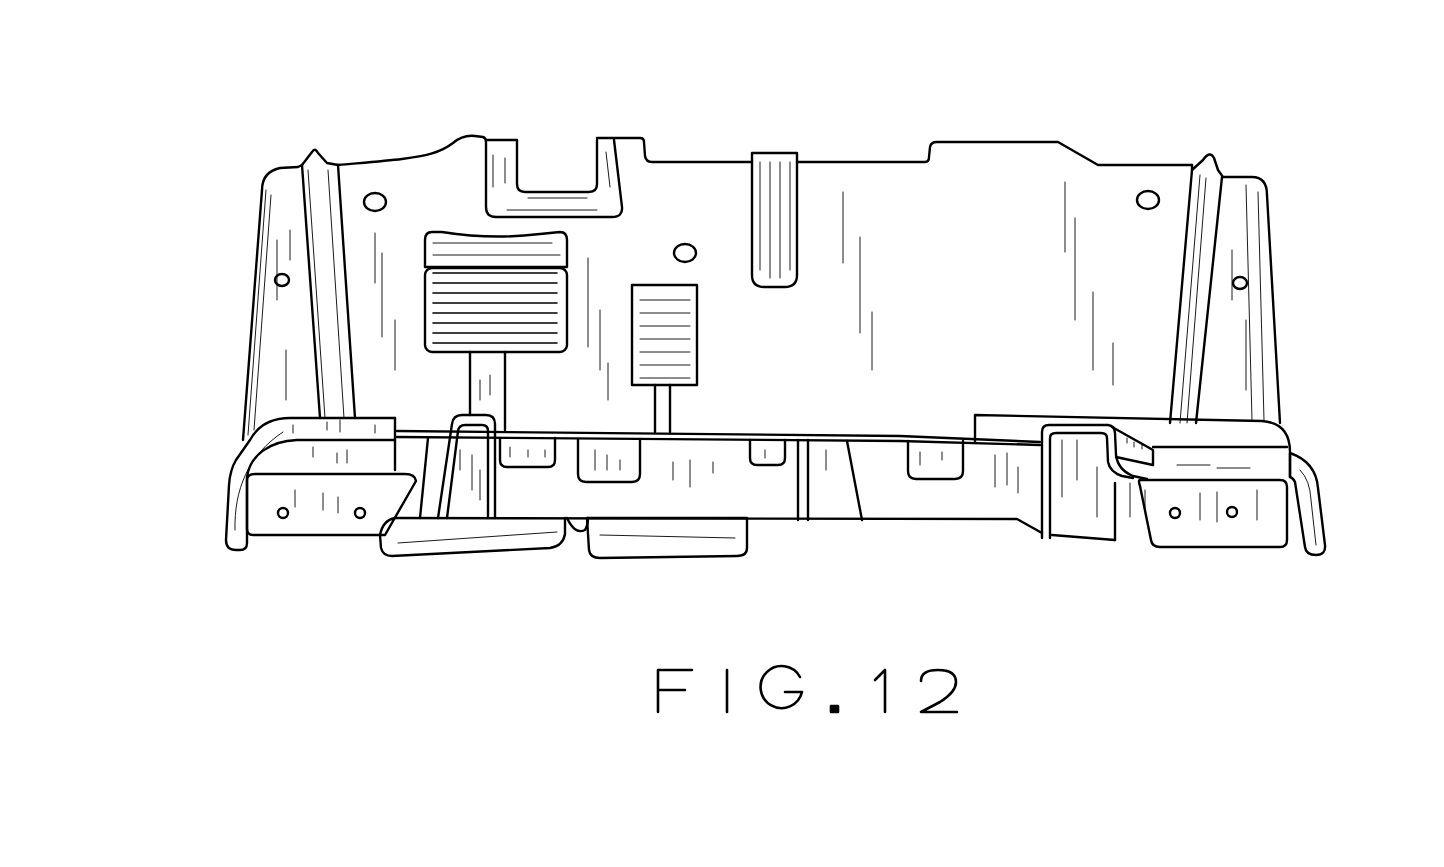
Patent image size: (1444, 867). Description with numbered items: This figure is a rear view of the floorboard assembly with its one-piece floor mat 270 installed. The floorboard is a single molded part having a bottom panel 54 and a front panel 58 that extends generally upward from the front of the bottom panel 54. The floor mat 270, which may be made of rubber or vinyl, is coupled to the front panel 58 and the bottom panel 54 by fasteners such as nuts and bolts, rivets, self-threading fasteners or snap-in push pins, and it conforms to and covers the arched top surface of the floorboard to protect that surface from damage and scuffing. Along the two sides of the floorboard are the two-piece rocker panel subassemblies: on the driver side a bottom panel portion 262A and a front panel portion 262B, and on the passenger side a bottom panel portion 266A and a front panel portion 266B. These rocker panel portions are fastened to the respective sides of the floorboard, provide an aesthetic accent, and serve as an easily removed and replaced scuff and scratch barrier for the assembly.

The floor mat 270 is at (945, 200).
The front panel 58 is at (730, 158).
The front panel portion 262B is at (263, 330).
The front panel portion 266B is at (1277, 362).
The bottom panel portion 262A is at (230, 502).
The bottom panel portion 266A is at (1323, 510).
The bottom panel 54 is at (893, 507).